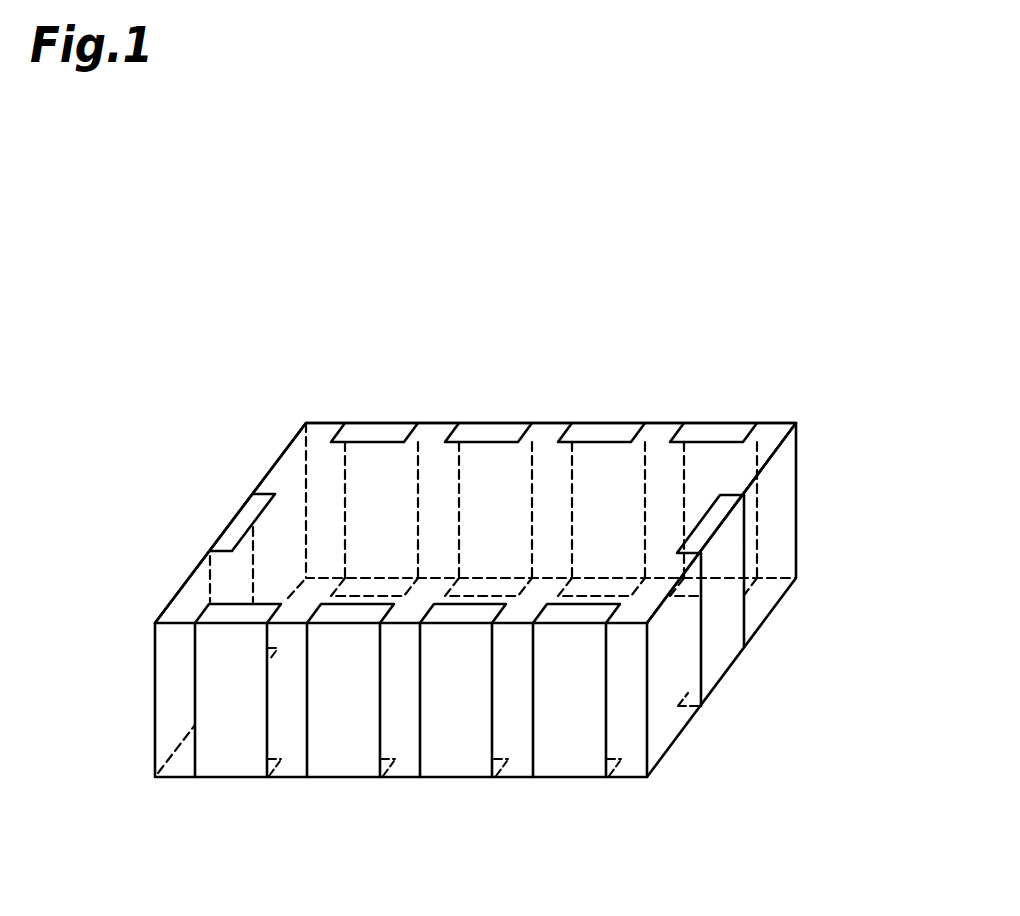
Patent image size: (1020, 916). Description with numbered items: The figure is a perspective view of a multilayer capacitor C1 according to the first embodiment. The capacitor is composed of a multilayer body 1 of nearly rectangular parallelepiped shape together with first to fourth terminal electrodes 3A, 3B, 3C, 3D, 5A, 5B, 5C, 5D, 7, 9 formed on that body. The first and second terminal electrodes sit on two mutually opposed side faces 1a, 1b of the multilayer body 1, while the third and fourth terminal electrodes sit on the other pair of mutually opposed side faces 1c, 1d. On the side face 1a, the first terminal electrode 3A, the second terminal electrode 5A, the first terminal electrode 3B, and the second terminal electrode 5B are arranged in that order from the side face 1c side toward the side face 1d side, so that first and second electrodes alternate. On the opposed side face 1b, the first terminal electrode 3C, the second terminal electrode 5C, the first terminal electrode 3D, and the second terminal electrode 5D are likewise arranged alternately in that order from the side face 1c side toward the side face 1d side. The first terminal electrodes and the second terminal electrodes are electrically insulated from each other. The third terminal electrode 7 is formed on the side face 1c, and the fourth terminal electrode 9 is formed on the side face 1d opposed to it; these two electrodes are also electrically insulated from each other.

The multilayer capacitor C1 is at (816, 362).
The multilayer body 1 is at (153, 703).
The side face 1a is at (400, 740).
The side face 1b is at (550, 495).
The side face 1c is at (285, 485).
The side face 1d is at (777, 547).
The first terminal electrode 3A is at (233, 765).
The first terminal electrode 3B is at (457, 765).
The first terminal electrode 3C is at (377, 431).
The first terminal electrode 3D is at (603, 432).
The second terminal electrode 5A is at (343, 765).
The second terminal electrode 5B is at (570, 765).
The second terminal electrode 5C is at (488, 432).
The second terminal electrode 5D is at (715, 433).
The third terminal electrode 7 is at (243, 518).
The fourth terminal electrode 9 is at (722, 623).